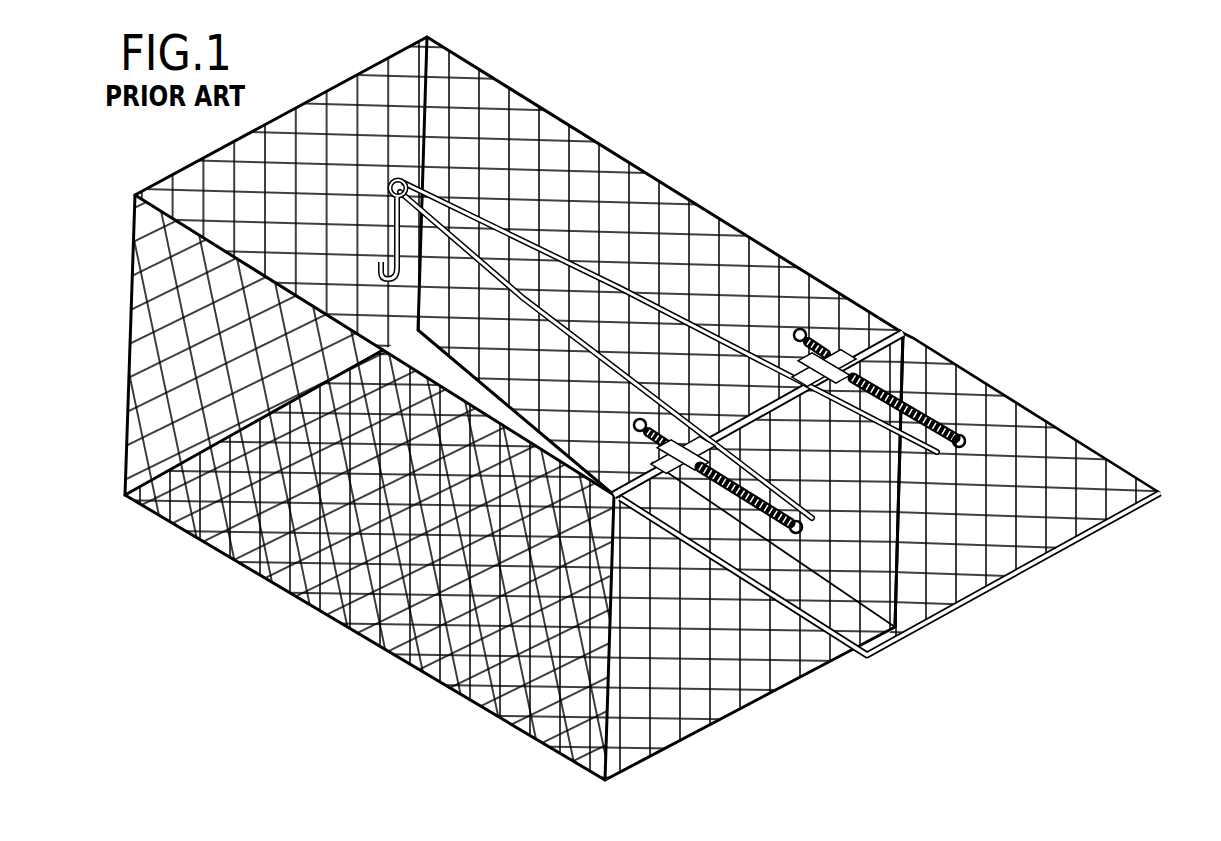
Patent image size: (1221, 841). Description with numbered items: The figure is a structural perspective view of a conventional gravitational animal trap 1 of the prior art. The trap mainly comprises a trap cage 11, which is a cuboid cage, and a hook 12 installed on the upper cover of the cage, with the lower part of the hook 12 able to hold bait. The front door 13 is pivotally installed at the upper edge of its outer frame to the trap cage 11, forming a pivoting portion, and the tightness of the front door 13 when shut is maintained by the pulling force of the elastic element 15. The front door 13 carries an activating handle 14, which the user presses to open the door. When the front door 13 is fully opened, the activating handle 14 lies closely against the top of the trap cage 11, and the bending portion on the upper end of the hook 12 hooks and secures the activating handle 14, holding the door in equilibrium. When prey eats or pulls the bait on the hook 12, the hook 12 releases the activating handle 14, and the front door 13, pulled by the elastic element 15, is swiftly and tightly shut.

The animal trap 1 is at (641, 106).
The trap cage 11 is at (745, 243).
The hook 12 is at (394, 216).
The front door 13 is at (1163, 493).
The activating handle 14 is at (610, 270).
The elastic element 15 is at (932, 416).